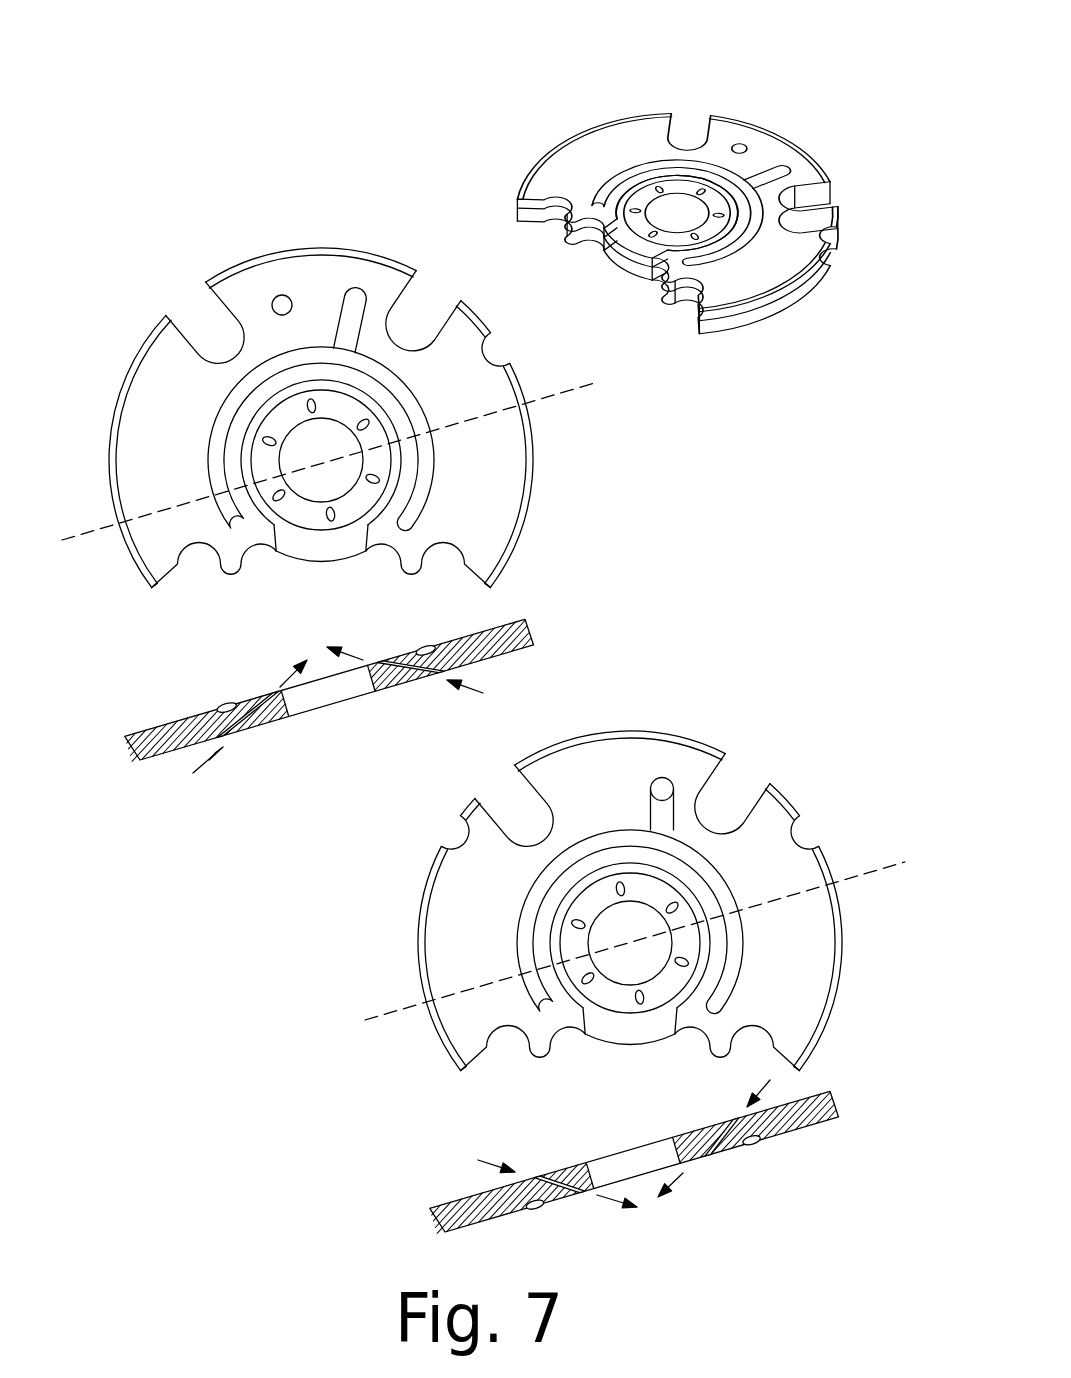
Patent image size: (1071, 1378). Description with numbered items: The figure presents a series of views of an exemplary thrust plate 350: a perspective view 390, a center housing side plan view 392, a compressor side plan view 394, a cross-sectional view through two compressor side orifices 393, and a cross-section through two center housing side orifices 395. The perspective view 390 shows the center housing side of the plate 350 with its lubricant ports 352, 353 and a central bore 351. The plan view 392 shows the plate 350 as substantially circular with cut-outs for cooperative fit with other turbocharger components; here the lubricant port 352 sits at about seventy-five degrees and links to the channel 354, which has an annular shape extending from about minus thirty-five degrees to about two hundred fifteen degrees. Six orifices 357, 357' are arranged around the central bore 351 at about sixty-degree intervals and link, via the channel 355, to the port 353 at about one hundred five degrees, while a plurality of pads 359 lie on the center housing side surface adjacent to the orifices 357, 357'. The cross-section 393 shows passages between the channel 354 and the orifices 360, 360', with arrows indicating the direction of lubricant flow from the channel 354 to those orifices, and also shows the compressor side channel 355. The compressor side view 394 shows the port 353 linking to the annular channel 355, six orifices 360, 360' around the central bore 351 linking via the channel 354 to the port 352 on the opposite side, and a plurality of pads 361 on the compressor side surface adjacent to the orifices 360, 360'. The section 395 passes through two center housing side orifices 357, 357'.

The plate 350 is at (477, 53).
The central bore 351 is at (655, 207).
The lubricant port 352 is at (793, 170).
The lubricant port 353 is at (733, 139).
The channel 354 is at (641, 163).
The channel 355 is at (221, 706).
The orifice 357 is at (476, 863).
The orifice 357' is at (479, 802).
The pads 359 is at (285, 417).
The orifice 360 is at (442, 775).
The orifice 360' is at (561, 872).
The pads 361 is at (587, 903).
The perspective view 390 is at (821, 122).
The center housing side plan view 392 is at (347, 226).
The cross-sectional view through two compressor side orifices 393 is at (145, 680).
The compressor side plan view 394 is at (650, 706).
The cross-section through two center housing side orifices 395 is at (444, 1182).